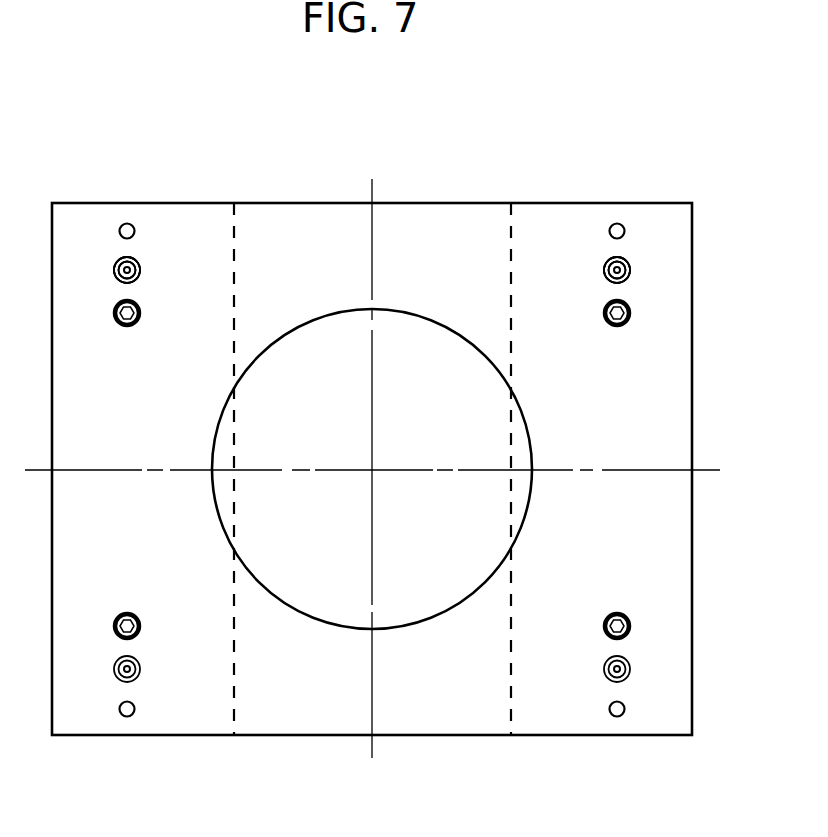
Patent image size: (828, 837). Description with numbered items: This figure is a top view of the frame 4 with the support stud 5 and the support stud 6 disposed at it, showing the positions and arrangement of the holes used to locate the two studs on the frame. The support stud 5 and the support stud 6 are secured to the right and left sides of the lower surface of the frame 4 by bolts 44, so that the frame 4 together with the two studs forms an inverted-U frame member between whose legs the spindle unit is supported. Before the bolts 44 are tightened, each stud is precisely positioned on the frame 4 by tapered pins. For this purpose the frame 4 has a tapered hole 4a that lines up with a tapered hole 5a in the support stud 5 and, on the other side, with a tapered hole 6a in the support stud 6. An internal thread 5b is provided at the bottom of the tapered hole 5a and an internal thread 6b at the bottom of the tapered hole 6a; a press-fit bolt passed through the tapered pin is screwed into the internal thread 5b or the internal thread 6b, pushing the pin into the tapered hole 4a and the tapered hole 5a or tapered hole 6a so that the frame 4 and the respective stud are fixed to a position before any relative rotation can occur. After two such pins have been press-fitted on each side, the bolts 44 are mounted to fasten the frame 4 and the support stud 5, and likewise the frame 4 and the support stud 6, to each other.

The frame 4 is at (464, 203).
The tapered hole 4a is at (134, 258).
The bolts 44 is at (141, 308).
The support stud 5 is at (593, 215).
The tapered hole 5a is at (606, 265).
The internal thread 5b is at (630, 270).
The support stud 6 is at (160, 703).
The tapered hole 6a is at (140, 266).
The internal thread 6b is at (115, 268).